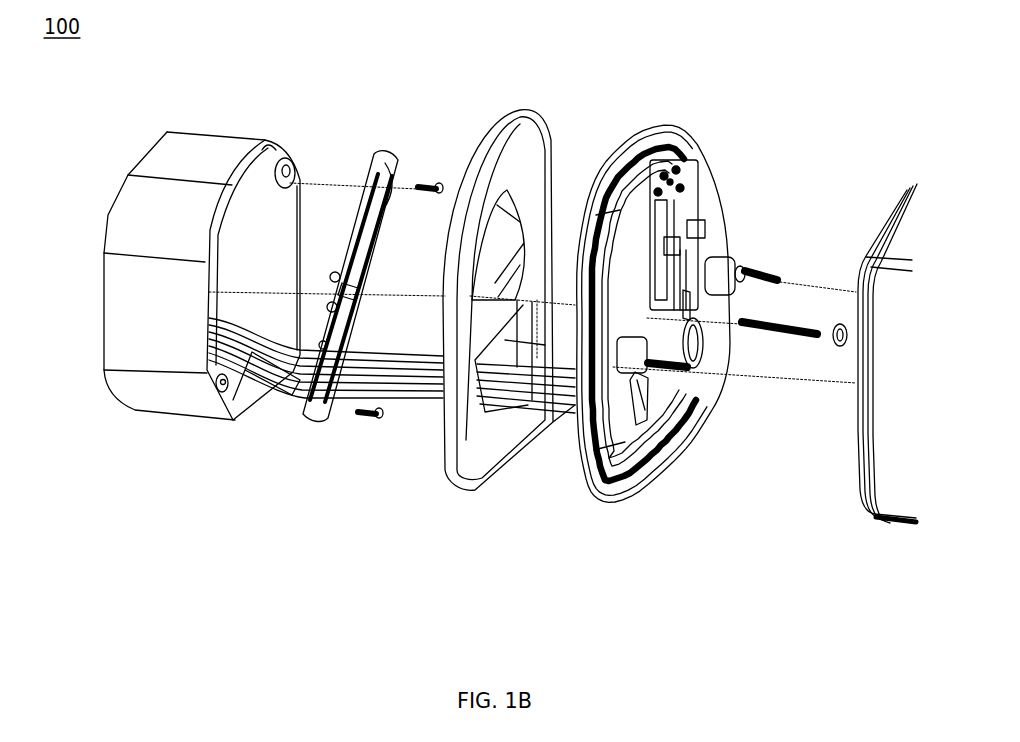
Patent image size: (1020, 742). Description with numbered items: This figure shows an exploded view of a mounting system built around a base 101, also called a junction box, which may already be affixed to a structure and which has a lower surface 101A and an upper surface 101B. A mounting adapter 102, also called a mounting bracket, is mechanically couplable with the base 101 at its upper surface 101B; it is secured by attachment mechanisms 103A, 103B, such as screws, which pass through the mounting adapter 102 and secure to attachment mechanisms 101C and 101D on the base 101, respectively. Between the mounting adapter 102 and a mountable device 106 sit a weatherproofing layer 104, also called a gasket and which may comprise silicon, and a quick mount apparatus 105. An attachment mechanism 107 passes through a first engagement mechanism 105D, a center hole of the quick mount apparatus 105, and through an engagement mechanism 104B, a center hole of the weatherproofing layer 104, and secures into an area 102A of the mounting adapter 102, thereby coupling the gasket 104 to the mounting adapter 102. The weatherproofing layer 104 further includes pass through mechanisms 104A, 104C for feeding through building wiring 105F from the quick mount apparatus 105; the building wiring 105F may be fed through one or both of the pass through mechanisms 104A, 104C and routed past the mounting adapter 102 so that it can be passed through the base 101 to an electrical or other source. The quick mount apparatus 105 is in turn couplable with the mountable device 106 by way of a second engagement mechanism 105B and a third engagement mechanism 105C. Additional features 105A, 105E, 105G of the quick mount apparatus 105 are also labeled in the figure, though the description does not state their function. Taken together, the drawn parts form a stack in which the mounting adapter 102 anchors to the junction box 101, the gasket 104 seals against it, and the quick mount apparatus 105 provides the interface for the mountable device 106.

The base 101 is at (185, 284).
The lower surface 101A is at (130, 152).
The upper surface 101B is at (262, 160).
The attachment mechanism 101C is at (290, 170).
The attachment mechanism 101D is at (223, 396).
The mounting adapter 102 is at (373, 241).
The area 102A is at (354, 286).
The attachment mechanism 103A is at (424, 178).
The attachment mechanism 103B is at (368, 420).
The weatherproofing layer 104 is at (513, 301).
The pass through mechanism 104A is at (507, 214).
The engagement mechanism 104B is at (505, 288).
The pass through mechanism 104C is at (500, 360).
The quick mount apparatus 105 is at (708, 268).
The circuit board components 105A is at (692, 183).
The second engagement mechanism 105B is at (727, 256).
The third engagement mechanism 105C is at (634, 373).
The first engagement mechanism 105D is at (690, 306).
The lower bracket 105E is at (640, 424).
The building wiring 105F is at (262, 382).
The retaining loop 105G is at (702, 350).
The mountable device 106 is at (900, 183).
The attachment mechanism 107 is at (798, 340).